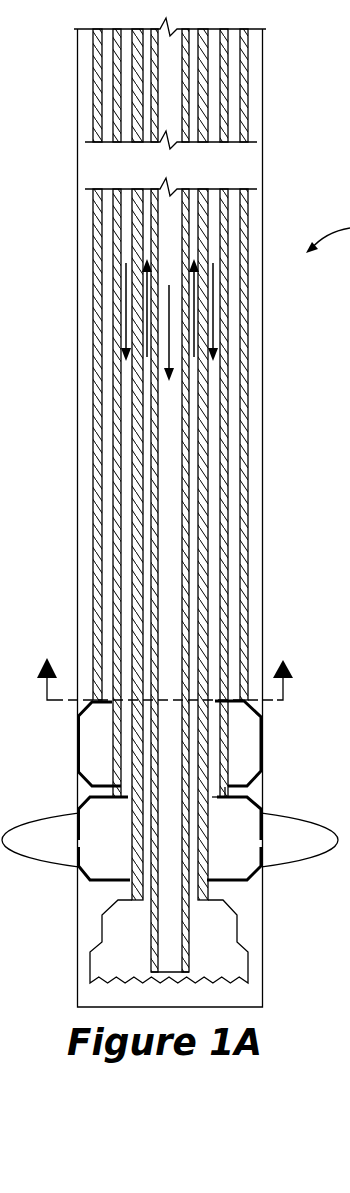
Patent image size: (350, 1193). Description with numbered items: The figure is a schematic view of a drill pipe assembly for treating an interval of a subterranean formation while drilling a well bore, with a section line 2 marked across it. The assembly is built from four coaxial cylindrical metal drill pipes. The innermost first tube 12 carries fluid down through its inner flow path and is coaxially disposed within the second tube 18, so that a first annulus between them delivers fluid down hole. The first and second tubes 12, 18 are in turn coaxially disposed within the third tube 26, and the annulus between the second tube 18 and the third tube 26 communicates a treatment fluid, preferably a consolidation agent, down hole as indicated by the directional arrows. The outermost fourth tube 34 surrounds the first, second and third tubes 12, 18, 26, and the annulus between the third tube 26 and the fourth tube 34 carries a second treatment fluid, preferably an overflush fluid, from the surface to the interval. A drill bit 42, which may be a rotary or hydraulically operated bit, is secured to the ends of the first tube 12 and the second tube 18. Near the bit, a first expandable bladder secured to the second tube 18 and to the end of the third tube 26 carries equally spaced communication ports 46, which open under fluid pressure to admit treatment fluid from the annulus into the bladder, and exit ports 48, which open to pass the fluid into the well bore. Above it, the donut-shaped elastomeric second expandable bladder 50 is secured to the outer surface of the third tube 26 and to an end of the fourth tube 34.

The first tube 12 is at (185, 403).
The second tube 18 is at (200, 458).
The third tube 26 is at (222, 532).
The fourth tube 34 is at (242, 590).
The drill bit 42 is at (250, 968).
The communication ports 46 is at (210, 793).
The exit ports 48 is at (257, 843).
The second expandable bladder 50 is at (257, 727).
The section line 2- 2 is at (165, 666).